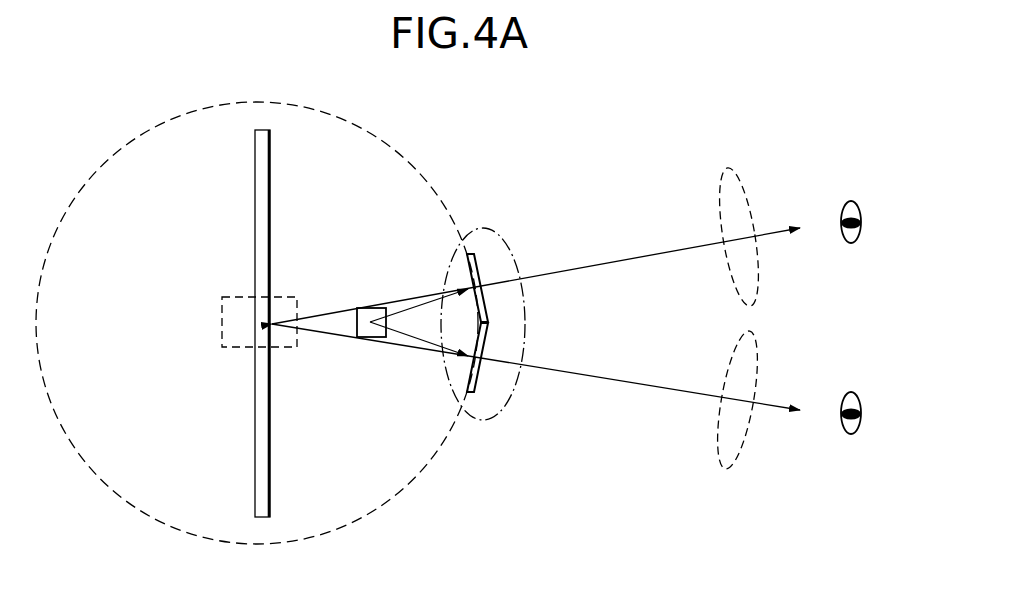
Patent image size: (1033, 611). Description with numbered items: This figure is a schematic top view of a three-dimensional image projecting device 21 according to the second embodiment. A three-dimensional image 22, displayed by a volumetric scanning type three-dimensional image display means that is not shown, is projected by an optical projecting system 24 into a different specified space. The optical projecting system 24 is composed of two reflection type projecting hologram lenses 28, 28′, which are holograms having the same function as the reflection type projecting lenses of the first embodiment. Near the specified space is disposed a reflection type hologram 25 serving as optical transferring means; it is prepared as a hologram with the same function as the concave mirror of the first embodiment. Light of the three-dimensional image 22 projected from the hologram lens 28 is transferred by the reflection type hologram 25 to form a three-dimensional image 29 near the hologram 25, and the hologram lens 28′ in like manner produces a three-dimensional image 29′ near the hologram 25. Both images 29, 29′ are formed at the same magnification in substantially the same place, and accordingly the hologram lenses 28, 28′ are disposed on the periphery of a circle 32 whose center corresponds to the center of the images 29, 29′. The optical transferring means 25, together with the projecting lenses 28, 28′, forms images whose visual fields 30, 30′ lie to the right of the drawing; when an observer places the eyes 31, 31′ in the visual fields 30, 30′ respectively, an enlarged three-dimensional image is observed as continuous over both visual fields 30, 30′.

The three-dimensional image projecting device 21 is at (621, 142).
The three-dimensional image 22 is at (369, 337).
The optical projecting system 24 is at (525, 334).
The reflection type hologram 25 is at (255, 166).
The reflection type projecting hologram lens 28 is at (474, 254).
The reflection type projecting hologram lens 28′ is at (474, 392).
The three-dimensional image 29 is at (289, 303).
The three-dimensional image 29′ is at (305, 284).
The visual field 30 is at (725, 467).
The visual field 30′ is at (728, 170).
The eye 31 is at (851, 434).
The eye 31′ is at (851, 201).
The circle 32 is at (146, 135).